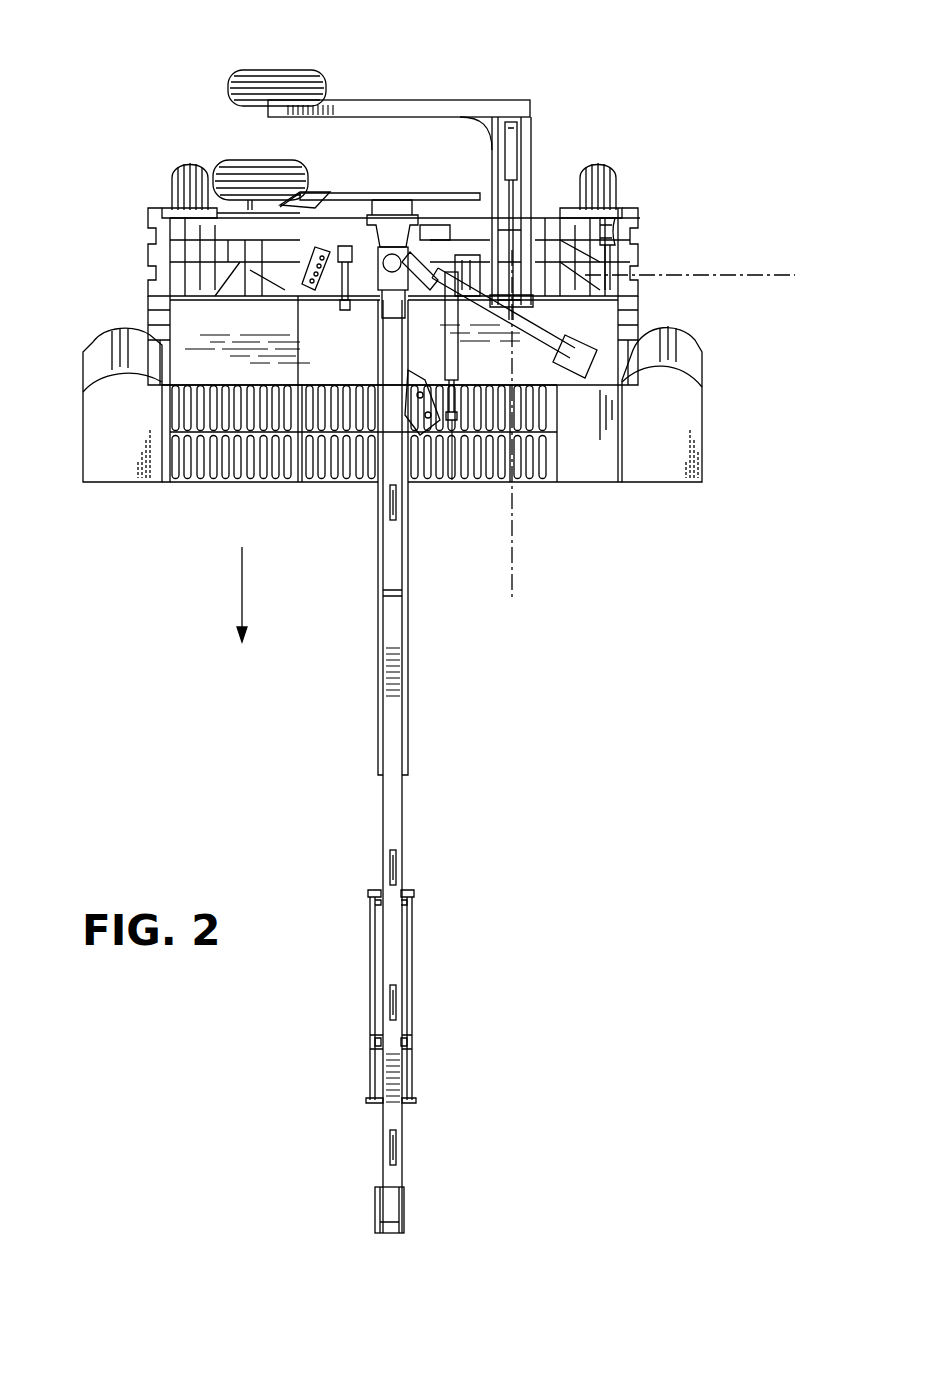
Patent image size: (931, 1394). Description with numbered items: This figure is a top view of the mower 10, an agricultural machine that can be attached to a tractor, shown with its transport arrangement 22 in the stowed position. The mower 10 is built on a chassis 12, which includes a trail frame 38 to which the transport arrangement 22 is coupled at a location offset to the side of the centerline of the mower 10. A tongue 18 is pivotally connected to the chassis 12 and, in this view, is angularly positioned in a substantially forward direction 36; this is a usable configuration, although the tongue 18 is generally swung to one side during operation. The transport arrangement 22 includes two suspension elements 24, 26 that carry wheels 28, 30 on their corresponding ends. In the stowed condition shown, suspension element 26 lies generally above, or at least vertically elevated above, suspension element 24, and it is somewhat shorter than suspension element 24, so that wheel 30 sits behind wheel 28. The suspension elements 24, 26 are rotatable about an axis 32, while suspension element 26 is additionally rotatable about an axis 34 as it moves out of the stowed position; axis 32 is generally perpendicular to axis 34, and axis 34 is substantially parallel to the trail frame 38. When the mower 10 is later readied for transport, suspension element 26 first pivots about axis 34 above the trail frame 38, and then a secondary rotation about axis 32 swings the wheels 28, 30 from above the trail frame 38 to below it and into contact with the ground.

The mower 10 is at (692, 128).
The chassis 12 is at (715, 430).
The tongue 18 is at (393, 628).
The transport arrangement 22 is at (556, 128).
The suspension element 24 is at (338, 196).
The suspension element 26 is at (440, 100).
The wheel 28 is at (243, 168).
The wheel 30 is at (282, 70).
The axis 32 is at (513, 553).
The axis 34 is at (713, 275).
The forward direction 36 is at (240, 607).
The trail frame 38 is at (636, 223).